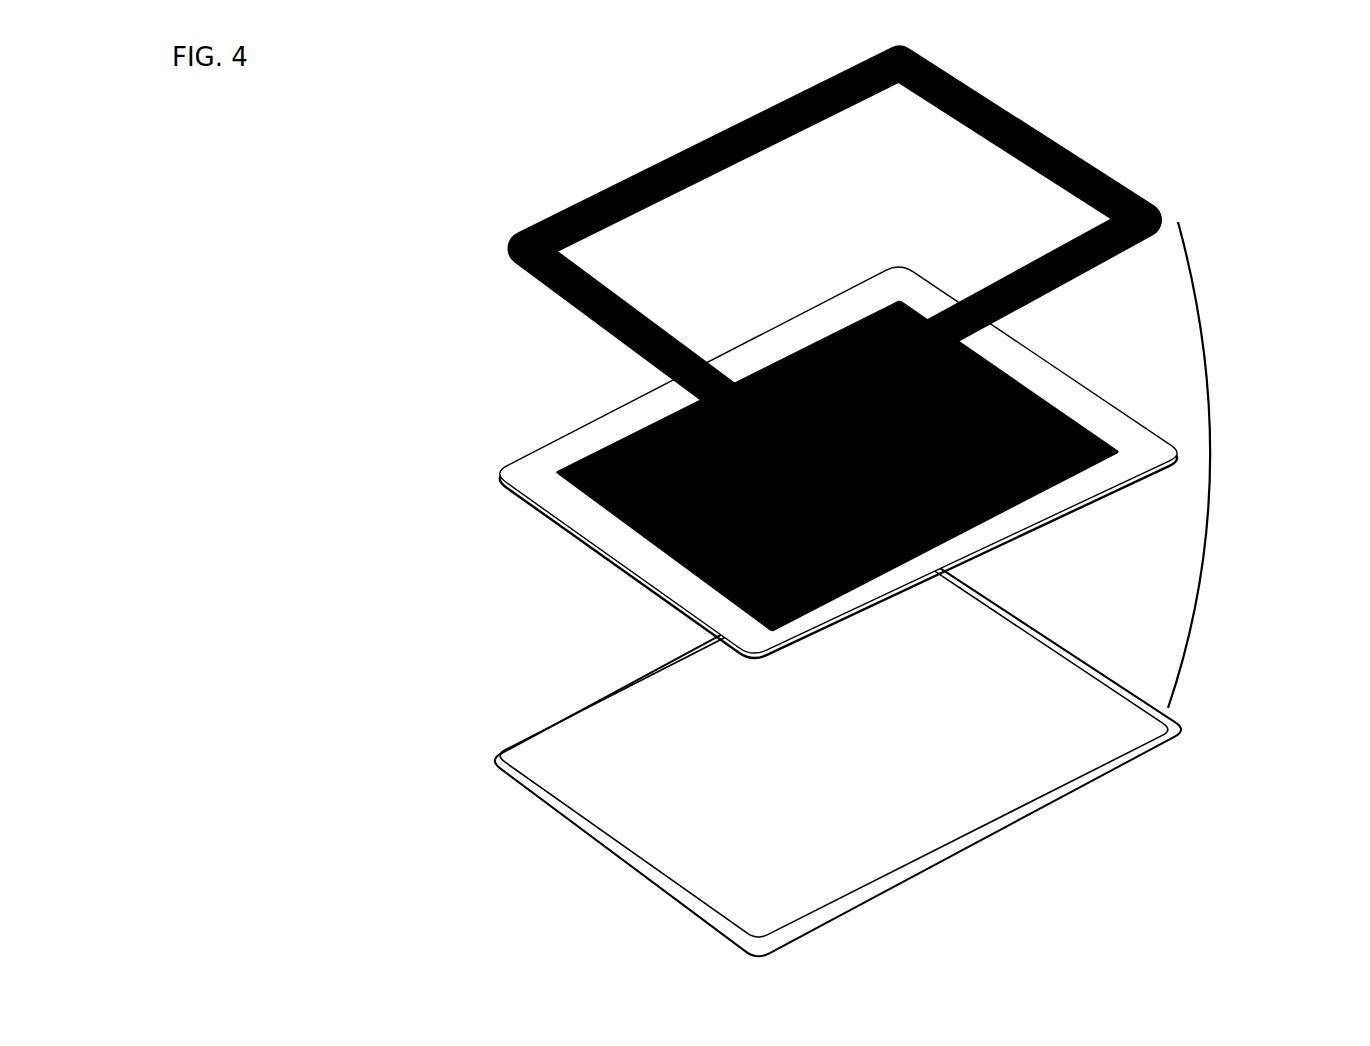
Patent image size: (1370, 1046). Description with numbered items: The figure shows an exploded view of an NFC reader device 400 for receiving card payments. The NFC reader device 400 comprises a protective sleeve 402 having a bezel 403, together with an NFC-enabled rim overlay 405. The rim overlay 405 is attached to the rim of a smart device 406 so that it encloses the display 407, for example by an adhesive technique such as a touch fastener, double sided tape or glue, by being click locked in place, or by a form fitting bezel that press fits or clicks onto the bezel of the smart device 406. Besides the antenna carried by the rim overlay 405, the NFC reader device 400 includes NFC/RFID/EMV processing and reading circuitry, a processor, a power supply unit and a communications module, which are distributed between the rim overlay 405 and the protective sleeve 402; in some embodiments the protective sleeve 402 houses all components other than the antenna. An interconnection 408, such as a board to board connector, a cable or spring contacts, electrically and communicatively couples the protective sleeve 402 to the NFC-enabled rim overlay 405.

The NFC reader device 400 is at (601, 354).
The protective sleeve 402 is at (616, 813).
The bezel 403 is at (1016, 843).
The NFC-enabled rim overlay 405 is at (601, 317).
The smart device 406 is at (650, 598).
The display 407 is at (622, 463).
The interconnection 408 is at (1211, 492).